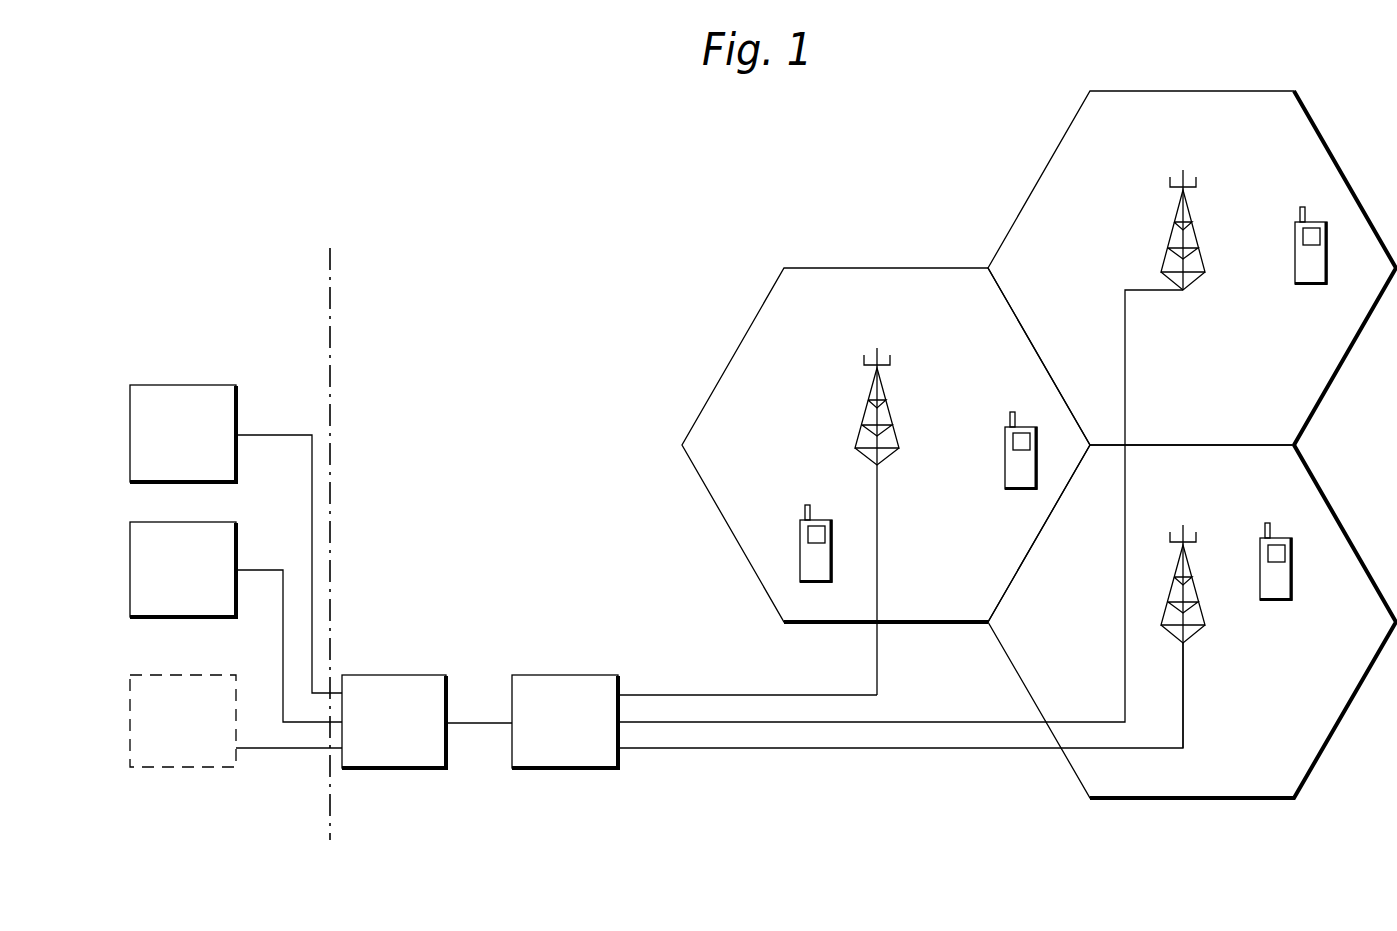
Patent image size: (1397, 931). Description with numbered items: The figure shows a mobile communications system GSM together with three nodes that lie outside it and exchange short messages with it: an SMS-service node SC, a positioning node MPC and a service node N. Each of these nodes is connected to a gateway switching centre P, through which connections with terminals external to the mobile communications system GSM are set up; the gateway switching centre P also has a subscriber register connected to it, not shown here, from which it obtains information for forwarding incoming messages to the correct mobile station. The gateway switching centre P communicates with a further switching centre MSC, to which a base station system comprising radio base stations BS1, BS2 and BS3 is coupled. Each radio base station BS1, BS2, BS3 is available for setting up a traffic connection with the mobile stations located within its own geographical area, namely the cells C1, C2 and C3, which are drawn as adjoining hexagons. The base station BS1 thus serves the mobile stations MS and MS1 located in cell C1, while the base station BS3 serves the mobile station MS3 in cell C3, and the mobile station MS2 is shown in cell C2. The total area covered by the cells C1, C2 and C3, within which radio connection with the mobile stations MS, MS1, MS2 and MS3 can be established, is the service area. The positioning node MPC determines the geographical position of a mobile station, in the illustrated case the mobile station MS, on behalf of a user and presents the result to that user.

The mobile communications system GSM is at (318, 272).
The SMS-service node SC is at (130, 434).
The positioning node MPC is at (136, 568).
The service node N is at (128, 717).
The gateway switching centre P is at (389, 762).
The switching centre MSC is at (567, 760).
The cell C1 is at (794, 360).
The cell C2 is at (1099, 197).
The cell C3 is at (1089, 585).
The radio base station BS1 is at (862, 413).
The radio base station BS2 is at (1165, 236).
The radio base station BS3 is at (1200, 605).
The mobile station MS is at (1005, 453).
The mobile station MS1 is at (800, 548).
The mobile station MS2 is at (1295, 251).
The mobile station MS3 is at (1293, 565).